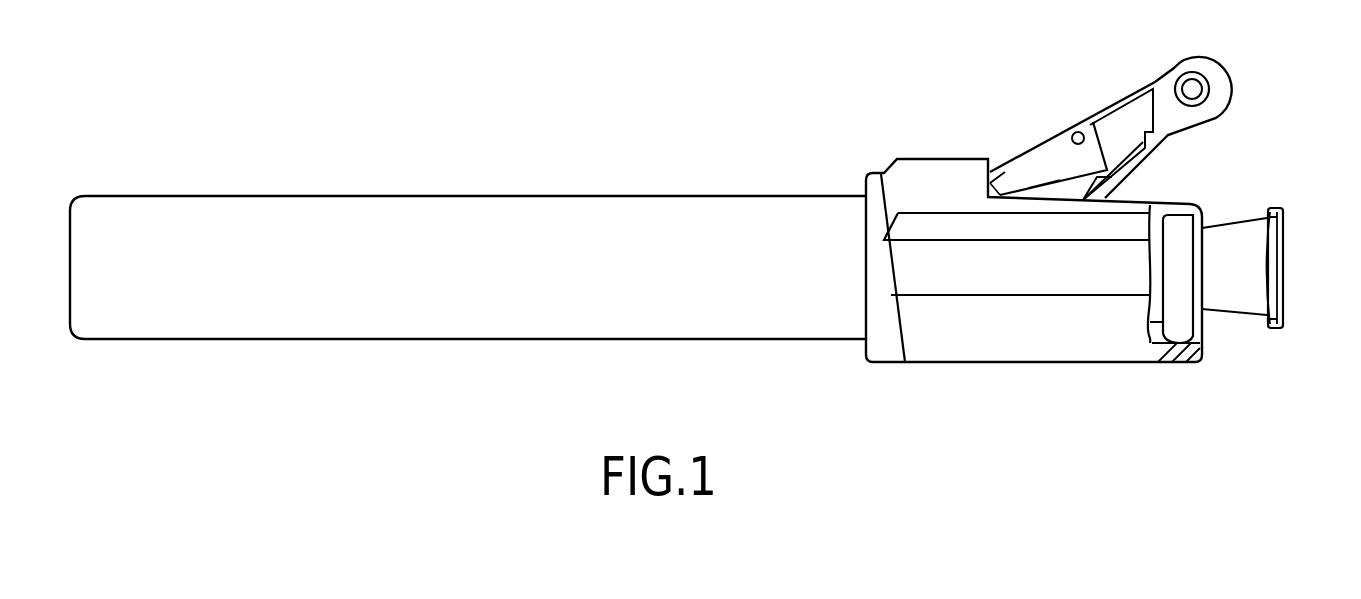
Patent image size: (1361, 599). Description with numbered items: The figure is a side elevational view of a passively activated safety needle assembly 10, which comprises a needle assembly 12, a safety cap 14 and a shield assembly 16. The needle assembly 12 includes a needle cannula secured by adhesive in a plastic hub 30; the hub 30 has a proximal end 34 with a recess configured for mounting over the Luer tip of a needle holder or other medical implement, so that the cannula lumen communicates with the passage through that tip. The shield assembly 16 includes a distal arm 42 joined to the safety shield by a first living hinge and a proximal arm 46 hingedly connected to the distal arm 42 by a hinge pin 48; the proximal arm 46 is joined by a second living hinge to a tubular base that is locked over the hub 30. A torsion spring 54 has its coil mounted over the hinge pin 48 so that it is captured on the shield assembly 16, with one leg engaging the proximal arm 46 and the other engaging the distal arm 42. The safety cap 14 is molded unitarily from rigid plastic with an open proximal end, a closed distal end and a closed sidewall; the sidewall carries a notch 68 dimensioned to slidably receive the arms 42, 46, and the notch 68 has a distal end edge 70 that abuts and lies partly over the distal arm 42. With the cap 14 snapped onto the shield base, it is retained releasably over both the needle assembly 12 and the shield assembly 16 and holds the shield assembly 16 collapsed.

The passively activated safety needle assembly 10 is at (832, 90).
The needle assembly 12 is at (1280, 196).
The safety cap 14 is at (318, 196).
The shield assembly 16 is at (1131, 90).
The hub 30 is at (1229, 312).
The proximal end 34 is at (1287, 312).
The distal arm 42 is at (1058, 130).
The proximal arm 46 is at (1150, 150).
The hinge pin 48 is at (1195, 90).
The torsion spring 54 is at (1095, 118).
The notch 68 is at (1028, 188).
The distal end edge 70 is at (1000, 176).